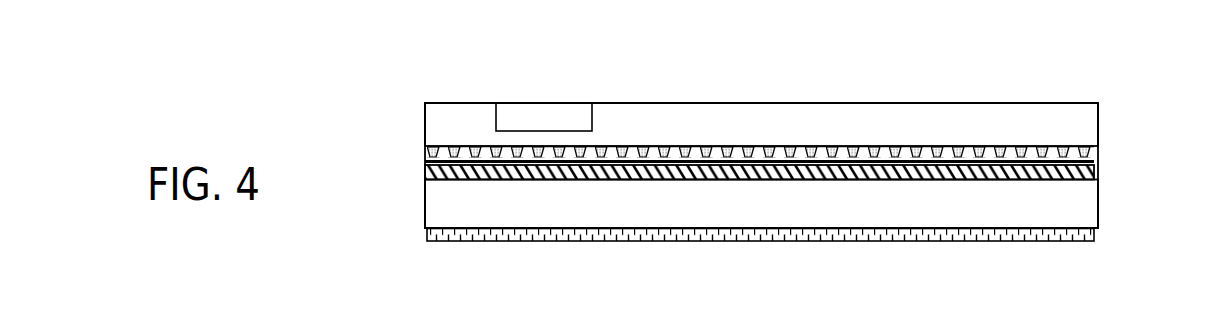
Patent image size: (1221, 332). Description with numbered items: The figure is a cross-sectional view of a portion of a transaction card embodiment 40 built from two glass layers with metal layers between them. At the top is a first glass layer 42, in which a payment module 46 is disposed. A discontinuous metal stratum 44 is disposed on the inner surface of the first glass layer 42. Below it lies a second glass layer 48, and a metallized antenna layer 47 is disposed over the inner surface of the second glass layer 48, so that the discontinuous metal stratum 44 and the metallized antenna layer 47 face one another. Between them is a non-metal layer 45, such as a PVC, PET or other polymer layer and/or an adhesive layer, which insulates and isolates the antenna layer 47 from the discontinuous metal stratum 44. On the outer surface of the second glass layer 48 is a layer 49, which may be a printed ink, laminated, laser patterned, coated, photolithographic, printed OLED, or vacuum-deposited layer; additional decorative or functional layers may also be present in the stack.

The card embodiment 40 is at (1062, 79).
The first glass layer 42 is at (884, 133).
The discontinuous metal stratum 44 is at (1100, 152).
The non-metal layer 45 is at (425, 162).
The payment module 46 is at (554, 129).
The metallized antenna layer 47 is at (425, 173).
The second glass layer 48 is at (884, 212).
The layer 49 is at (425, 234).